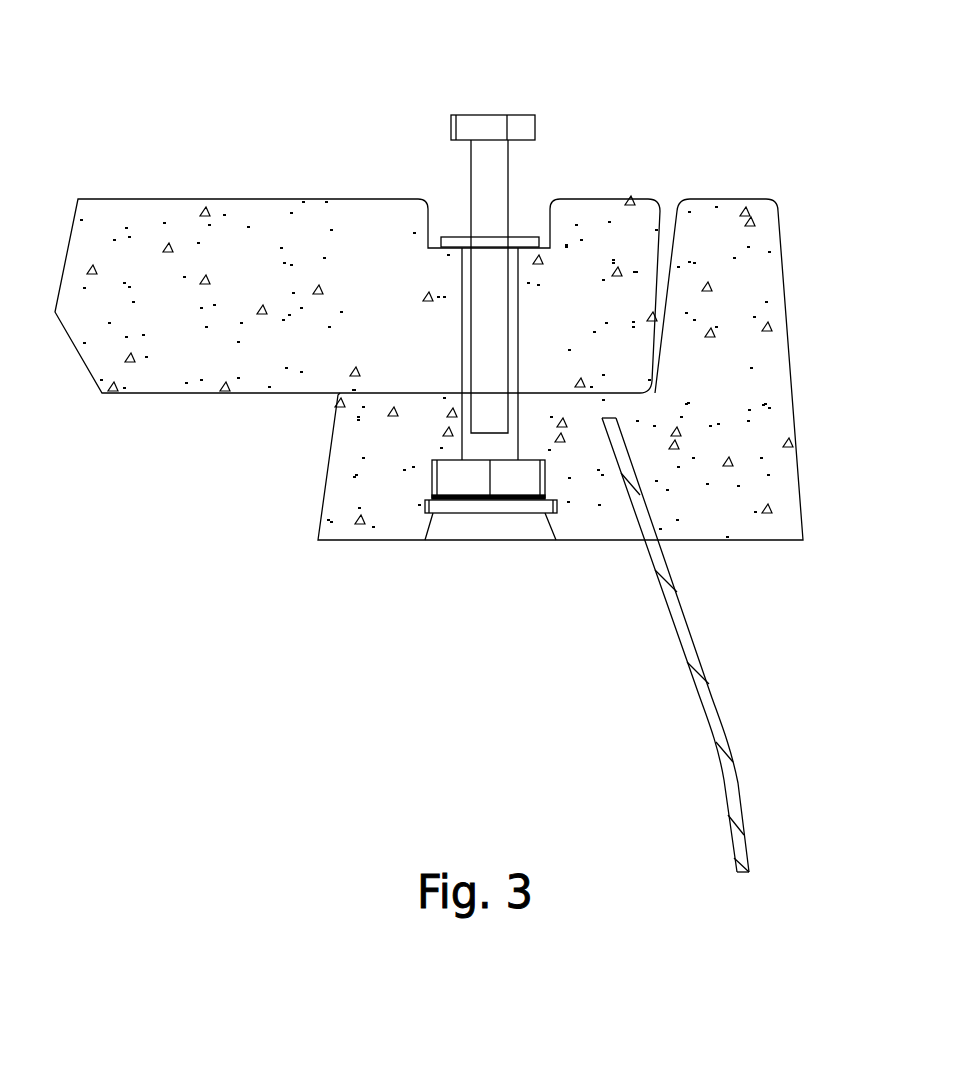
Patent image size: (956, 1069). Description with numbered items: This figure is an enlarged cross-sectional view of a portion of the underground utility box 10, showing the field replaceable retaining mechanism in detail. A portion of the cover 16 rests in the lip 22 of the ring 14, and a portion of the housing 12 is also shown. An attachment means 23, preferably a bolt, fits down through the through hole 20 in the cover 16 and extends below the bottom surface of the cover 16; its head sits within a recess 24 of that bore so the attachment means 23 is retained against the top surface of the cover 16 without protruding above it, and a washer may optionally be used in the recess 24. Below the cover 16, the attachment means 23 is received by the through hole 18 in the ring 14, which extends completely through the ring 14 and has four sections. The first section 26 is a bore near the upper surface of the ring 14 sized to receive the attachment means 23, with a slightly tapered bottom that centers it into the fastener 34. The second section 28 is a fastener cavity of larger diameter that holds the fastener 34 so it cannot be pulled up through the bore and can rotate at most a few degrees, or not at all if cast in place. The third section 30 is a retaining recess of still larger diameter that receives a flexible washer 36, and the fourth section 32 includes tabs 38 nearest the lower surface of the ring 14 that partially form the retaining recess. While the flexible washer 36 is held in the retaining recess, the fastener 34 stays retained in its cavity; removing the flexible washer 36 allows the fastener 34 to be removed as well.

The box 10 is at (131, 641).
The housing 12 is at (700, 666).
The ring 14 is at (760, 353).
The cover 16 is at (177, 222).
The through hole 18 is at (468, 566).
The through hole 20 is at (552, 225).
The lip 22 is at (667, 198).
The attachment means 23 is at (485, 130).
The recess 24 is at (452, 220).
The first section 26 is at (483, 452).
The second section 28 is at (437, 488).
The third section 30 is at (423, 507).
The fourth section 32 is at (457, 527).
The fastener 34 is at (507, 478).
The flexible washer 36 is at (527, 505).
The tabs 38 is at (557, 513).